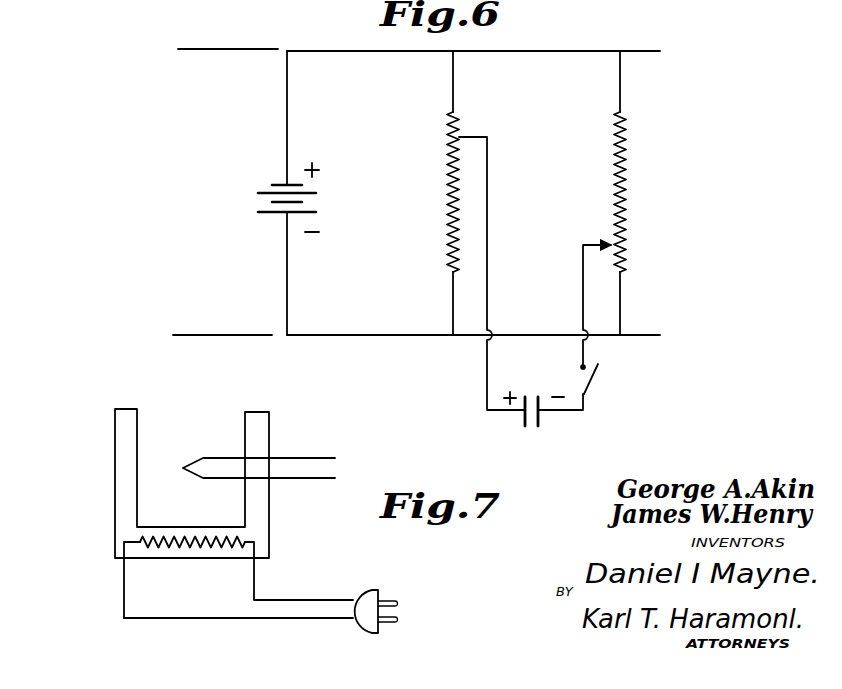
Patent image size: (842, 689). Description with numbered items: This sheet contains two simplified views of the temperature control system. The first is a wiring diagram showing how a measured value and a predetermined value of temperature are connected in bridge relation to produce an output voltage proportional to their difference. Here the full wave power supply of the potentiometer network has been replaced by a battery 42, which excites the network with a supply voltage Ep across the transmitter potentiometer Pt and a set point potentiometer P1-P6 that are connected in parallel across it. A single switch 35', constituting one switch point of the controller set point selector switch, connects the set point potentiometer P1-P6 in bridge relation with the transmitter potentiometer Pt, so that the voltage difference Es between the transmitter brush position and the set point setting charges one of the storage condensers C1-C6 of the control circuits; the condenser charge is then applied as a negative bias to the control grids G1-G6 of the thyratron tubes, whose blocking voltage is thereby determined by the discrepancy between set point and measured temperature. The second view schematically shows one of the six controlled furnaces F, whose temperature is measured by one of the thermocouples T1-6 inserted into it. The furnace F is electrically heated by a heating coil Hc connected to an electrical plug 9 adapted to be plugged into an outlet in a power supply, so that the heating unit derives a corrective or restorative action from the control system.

In FIG. 6, the battery 42 is at (272, 215).
In FIG. 6, the switch 35' is at (613, 320).
In FIG. 7, the electrical plug 9 is at (372, 633).
In FIG. 6, the plate supply voltage Ep is at (193, 325).
In FIG. 6, the transmitter potentiometer Pt is at (447, 190).
In FIG. 6, the set point potentiometers P1-P6 is at (627, 223).
In FIG. 6, the signal voltage Es is at (581, 276).
In FIG. 6, the storage condensers C1-C6 is at (522, 299).
In FIG. 6, the control grids G1-G6 is at (592, 411).
In FIG. 7, the furnace F is at (115, 462).
In FIG. 7, the thermocouples T1-6 is at (208, 458).
In FIG. 7, the heating coil Hc is at (145, 548).